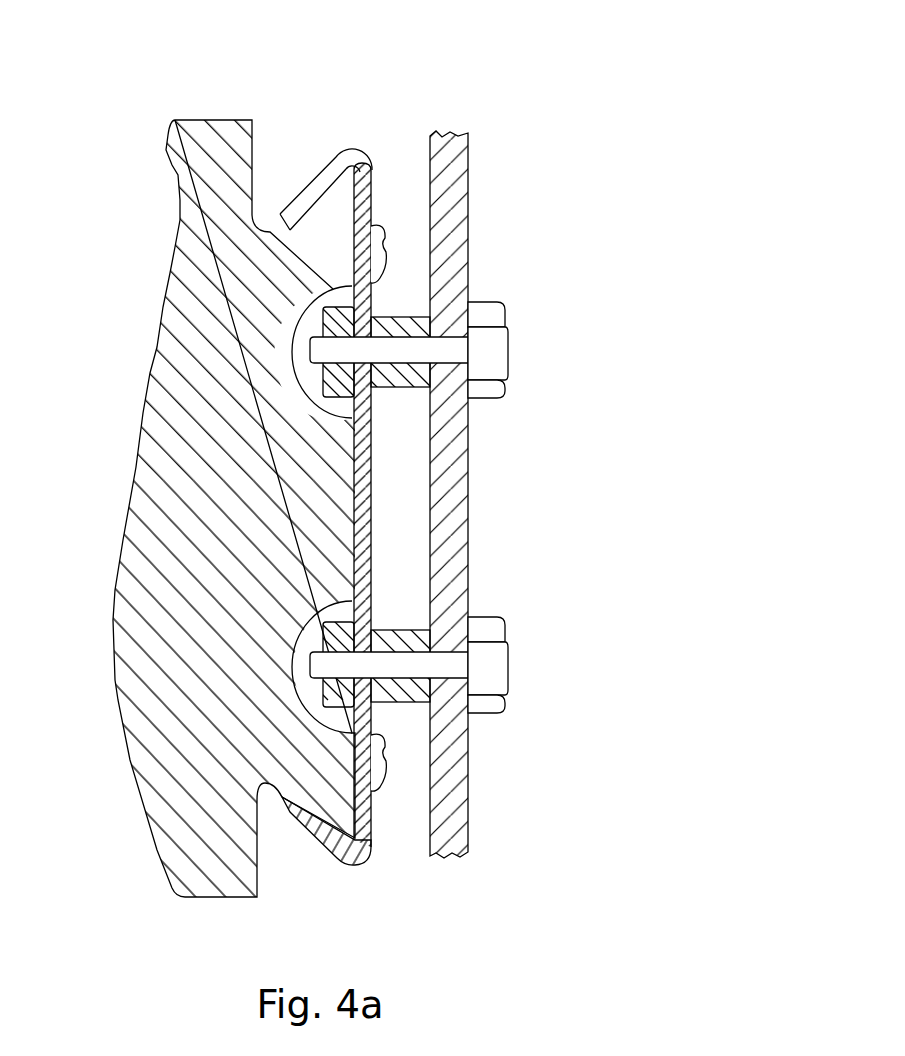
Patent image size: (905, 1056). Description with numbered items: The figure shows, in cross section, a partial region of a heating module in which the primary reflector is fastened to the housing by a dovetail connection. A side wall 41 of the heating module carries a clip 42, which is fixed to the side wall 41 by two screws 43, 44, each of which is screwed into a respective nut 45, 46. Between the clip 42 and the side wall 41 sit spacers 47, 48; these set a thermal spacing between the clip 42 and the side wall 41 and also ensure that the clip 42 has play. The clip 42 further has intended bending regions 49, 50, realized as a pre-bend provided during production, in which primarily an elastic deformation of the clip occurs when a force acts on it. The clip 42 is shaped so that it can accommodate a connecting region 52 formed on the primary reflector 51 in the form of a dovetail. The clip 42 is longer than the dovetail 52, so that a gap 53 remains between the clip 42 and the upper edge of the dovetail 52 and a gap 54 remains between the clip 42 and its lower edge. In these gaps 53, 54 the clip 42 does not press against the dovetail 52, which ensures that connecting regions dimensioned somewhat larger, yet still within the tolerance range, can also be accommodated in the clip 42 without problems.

The side wall 41 is at (470, 210).
The clip 42 is at (376, 520).
The screw 43 is at (508, 350).
The screw 44 is at (508, 660).
The nut 45 is at (347, 398).
The nut 46 is at (338, 708).
The spacer 47 is at (405, 397).
The spacer 48 is at (403, 702).
The intended bending region 49 is at (387, 243).
The intended bending region 50 is at (390, 770).
The primary reflector 51 is at (175, 182).
The connecting region 52 is at (288, 207).
The gap 53 is at (358, 152).
The gap 54 is at (362, 866).